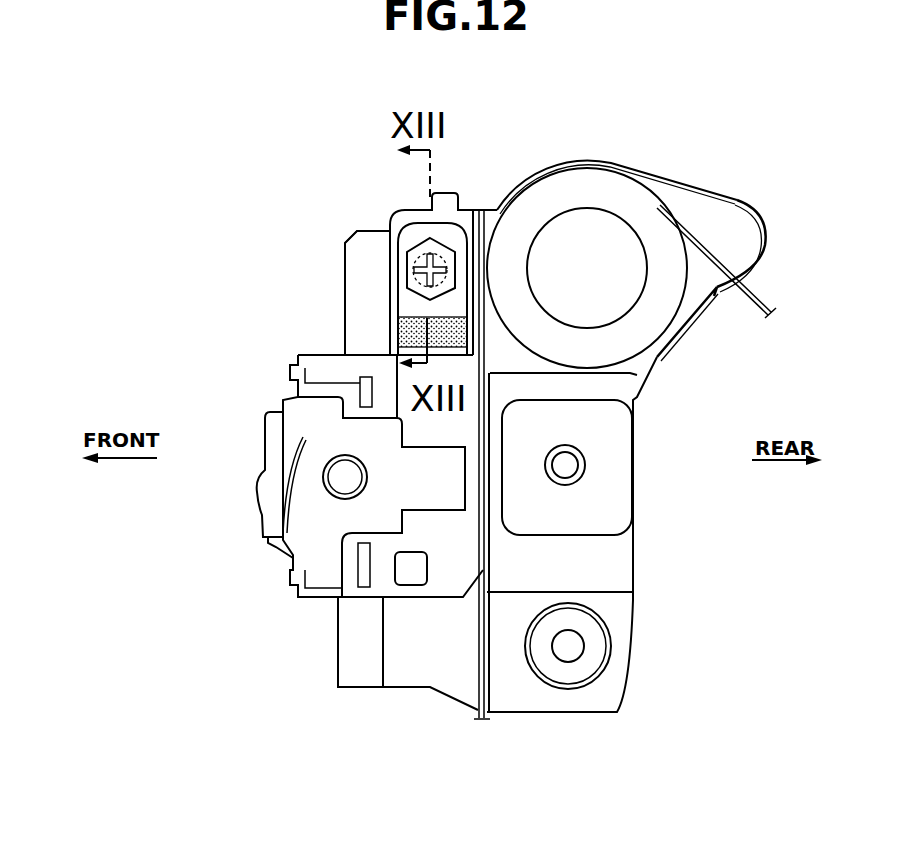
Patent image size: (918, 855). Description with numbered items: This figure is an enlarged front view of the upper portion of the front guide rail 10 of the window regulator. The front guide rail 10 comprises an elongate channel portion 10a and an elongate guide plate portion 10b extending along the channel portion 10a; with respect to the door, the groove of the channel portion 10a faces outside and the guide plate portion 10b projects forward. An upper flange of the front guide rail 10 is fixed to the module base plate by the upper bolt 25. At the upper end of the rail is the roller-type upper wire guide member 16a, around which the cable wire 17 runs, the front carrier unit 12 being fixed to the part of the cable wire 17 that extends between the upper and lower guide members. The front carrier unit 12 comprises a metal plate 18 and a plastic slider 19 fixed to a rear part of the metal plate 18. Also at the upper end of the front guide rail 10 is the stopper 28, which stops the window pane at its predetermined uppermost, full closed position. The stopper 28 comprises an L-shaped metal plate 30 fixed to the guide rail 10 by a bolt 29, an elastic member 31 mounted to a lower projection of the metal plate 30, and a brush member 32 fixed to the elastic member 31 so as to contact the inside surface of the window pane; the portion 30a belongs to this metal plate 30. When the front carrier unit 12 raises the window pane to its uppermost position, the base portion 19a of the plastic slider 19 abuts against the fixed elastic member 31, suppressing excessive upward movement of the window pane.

The front guide rail 10 is at (345, 268).
The channel portion 10a is at (522, 713).
The guide plate portion 10b is at (338, 652).
The front carrier unit 12 is at (245, 416).
The upper wire guide member 16a is at (650, 190).
The cable wire 17 is at (760, 292).
The metal plate 18 is at (256, 478).
The plastic slider 19 is at (466, 490).
The base portion 19a is at (312, 355).
The upper bolt 25 is at (586, 468).
The stopper 28 is at (380, 239).
The bolt 29 is at (463, 237).
The L-shaped metal plate 30 is at (440, 223).
The fastener head 30a is at (420, 235).
The elastic member 31 is at (397, 358).
The brush member 32 is at (403, 312).